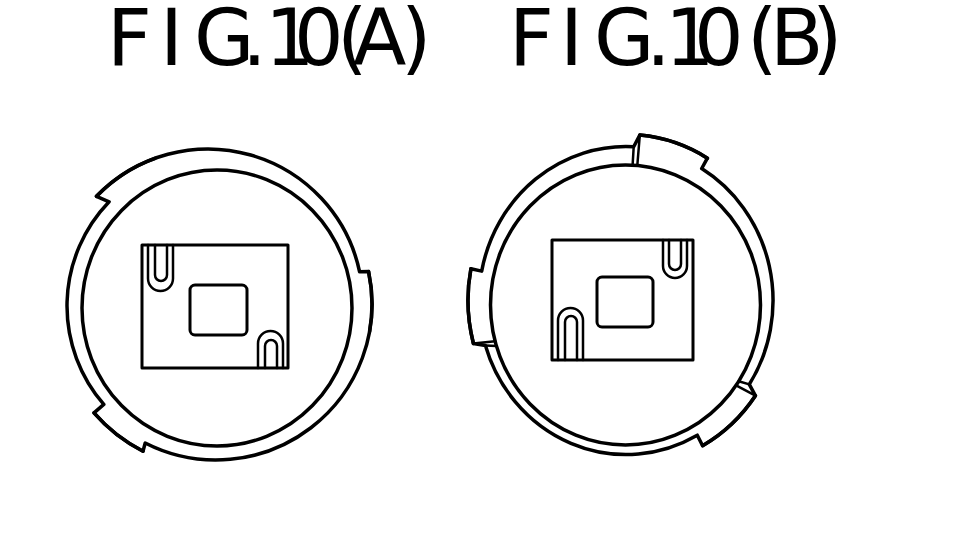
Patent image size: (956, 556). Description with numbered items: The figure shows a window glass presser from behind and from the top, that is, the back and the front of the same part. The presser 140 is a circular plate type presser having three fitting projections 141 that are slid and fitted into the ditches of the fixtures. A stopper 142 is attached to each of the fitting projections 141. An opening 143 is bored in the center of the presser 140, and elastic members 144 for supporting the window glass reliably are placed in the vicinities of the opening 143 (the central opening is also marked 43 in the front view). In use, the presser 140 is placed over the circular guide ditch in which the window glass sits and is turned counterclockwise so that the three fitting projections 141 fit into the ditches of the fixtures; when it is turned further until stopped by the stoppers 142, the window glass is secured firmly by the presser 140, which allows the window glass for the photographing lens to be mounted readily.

In FIG. 10A, the presser 140 is at (302, 190).
In FIG. 10B, the presser 140 is at (737, 200).
In FIG. 10A, the fitting projections 141 is at (122, 166).
In FIG. 10B, the fitting projections 141 is at (680, 140).
In FIG. 10B, the stopper 142 is at (632, 155).
In FIG. 10A, the opening 143 is at (220, 325).
In FIG. 10B, the sensor element 43 is at (615, 290).
In FIG. 10B, the elastic members 144 is at (677, 252).